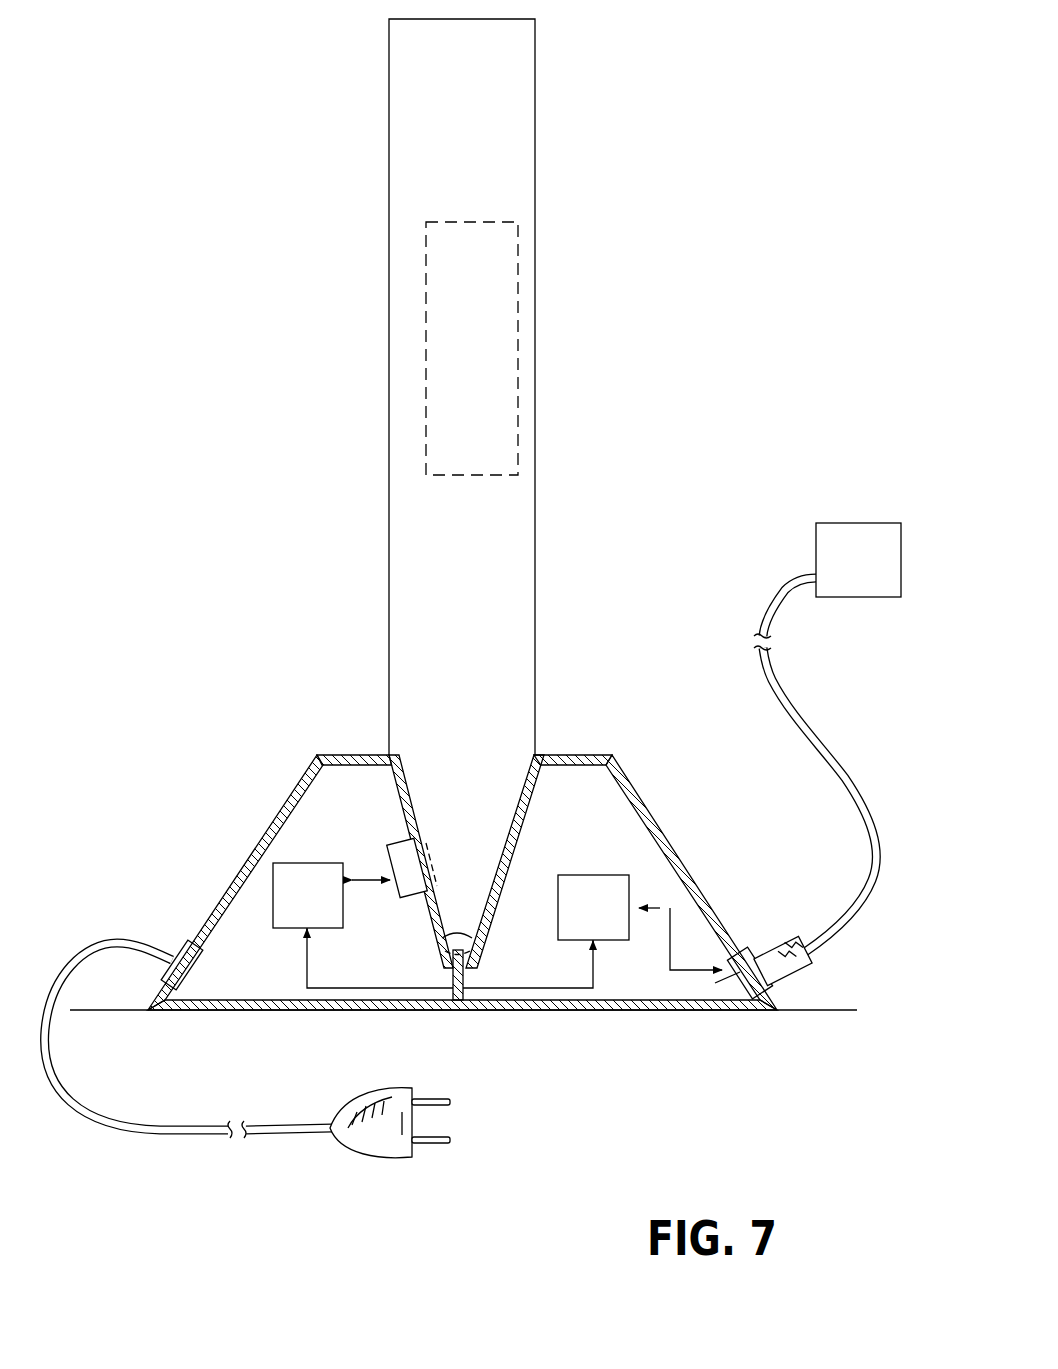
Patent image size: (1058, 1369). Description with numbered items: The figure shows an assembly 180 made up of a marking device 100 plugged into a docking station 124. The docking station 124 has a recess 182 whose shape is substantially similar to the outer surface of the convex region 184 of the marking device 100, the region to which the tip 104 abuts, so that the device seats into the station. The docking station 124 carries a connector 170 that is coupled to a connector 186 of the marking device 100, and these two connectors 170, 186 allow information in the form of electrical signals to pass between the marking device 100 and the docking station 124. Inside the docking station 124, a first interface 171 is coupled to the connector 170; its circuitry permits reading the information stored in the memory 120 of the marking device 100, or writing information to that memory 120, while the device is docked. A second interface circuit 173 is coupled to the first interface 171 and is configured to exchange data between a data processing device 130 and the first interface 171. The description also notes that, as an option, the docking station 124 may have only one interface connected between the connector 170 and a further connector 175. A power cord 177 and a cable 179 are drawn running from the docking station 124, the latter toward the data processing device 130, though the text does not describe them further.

The marking device 100 is at (519, 387).
The tip 104 is at (450, 976).
The memory 120 is at (505, 268).
The docking station 124 is at (636, 790).
The data processing device 130 is at (816, 545).
The connector 170 is at (389, 847).
The first interface 171 is at (273, 915).
The second interface circuit 173 is at (579, 875).
The connector 175 is at (741, 982).
The power cord 177 is at (168, 1134).
The communication cable 179 is at (818, 750).
The assembly 180 is at (462, 893).
The recess 182 is at (533, 797).
The convex region 184 is at (463, 888).
The connector 186 is at (427, 850).